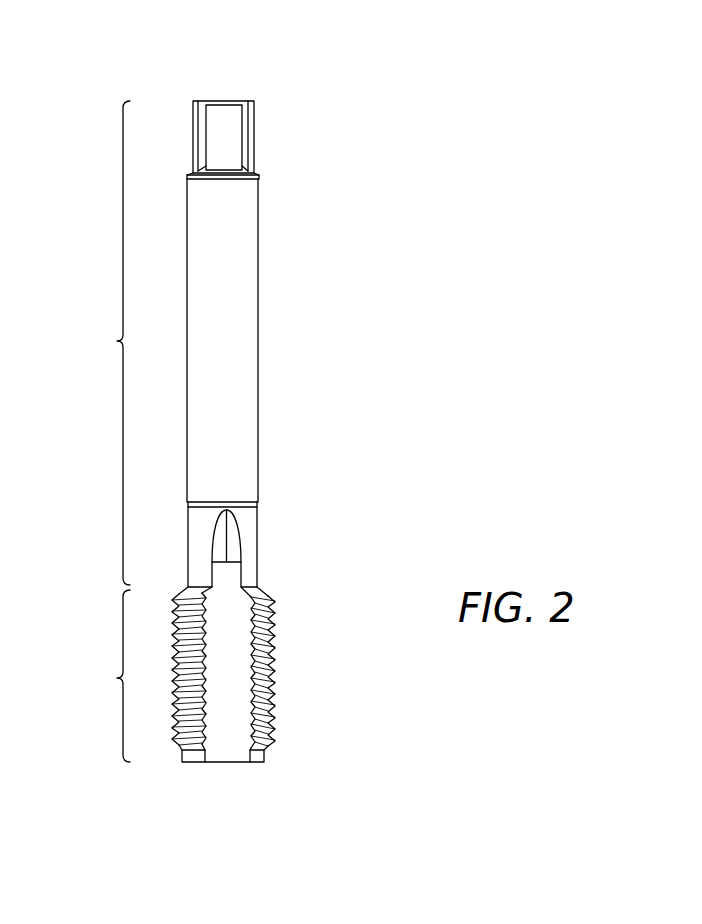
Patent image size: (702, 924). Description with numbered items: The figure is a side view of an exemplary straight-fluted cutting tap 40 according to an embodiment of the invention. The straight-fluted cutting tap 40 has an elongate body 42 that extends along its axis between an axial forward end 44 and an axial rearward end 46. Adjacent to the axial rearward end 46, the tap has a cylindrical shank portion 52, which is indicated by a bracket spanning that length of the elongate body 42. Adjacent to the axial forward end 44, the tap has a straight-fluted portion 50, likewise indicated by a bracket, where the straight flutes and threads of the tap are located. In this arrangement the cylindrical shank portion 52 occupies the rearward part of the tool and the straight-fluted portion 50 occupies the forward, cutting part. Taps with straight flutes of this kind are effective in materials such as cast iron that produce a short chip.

The straight-fluted cutting tap 40 is at (443, 182).
The elongate body 42 is at (258, 310).
The axial forward end 44 is at (235, 763).
The axial rearward end 46 is at (232, 101).
The straight-fluted portion 50 is at (109, 676).
The cylindrical shank portion 52 is at (110, 343).